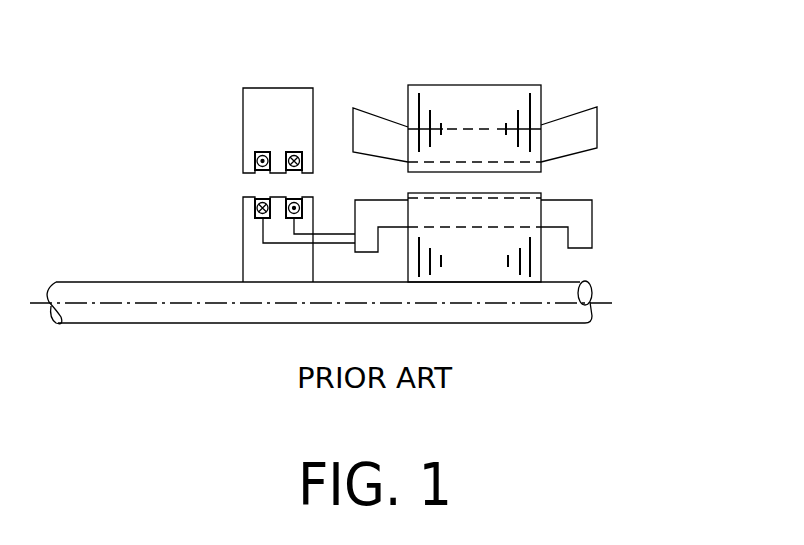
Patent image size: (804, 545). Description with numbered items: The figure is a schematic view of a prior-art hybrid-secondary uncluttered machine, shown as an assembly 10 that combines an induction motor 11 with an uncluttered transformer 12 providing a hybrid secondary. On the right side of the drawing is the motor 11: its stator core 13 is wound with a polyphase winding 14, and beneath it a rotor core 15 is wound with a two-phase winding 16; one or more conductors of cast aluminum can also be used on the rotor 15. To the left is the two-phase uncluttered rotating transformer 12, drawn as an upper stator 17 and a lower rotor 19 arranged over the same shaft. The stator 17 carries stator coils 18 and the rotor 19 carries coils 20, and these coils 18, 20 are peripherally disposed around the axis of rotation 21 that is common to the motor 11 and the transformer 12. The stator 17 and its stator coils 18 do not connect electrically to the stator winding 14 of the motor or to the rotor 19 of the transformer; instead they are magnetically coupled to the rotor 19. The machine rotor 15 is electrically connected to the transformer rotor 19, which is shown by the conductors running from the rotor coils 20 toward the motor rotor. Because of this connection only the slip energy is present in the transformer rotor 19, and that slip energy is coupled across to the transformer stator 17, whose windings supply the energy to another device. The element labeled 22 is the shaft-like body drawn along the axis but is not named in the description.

The assembly 10 is at (567, 88).
The induction motor 11 is at (462, 77).
The uncluttered transformer 12 is at (275, 87).
The stator core 13 is at (438, 85).
The polyphase winding 14 is at (597, 131).
The rotor core 15 is at (537, 269).
The two-phase winding 16 is at (593, 225).
The stator 17 is at (243, 103).
The stator coils 18 is at (257, 157).
The rotor 19 is at (242, 255).
The coils 20 is at (258, 207).
The axis of rotation 21 is at (605, 303).
The wire rope cable 22 is at (498, 323).